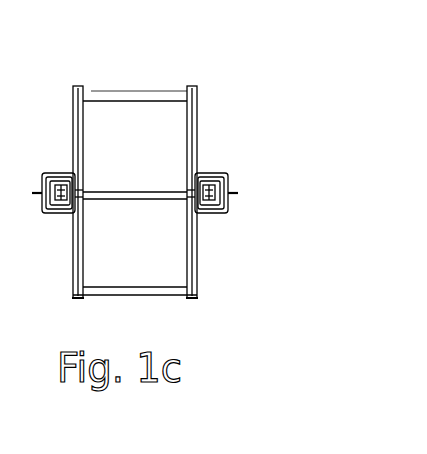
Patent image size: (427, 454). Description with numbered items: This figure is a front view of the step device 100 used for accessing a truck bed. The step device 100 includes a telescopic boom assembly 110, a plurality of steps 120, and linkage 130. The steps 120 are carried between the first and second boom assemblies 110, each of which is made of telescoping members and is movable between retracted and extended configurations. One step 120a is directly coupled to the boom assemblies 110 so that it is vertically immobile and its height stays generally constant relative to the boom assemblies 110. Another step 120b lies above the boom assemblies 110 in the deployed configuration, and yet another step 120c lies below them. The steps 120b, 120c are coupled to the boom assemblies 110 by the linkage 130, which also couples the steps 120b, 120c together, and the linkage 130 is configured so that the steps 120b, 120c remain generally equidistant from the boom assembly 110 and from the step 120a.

The step device 100 is at (222, 352).
The telescopic boom assembly 110 is at (40, 168).
The steps 120 is at (88, 280).
The step 120a is at (160, 192).
The step 120b is at (172, 100).
The step 120c is at (155, 314).
The linkage 130 is at (198, 130).